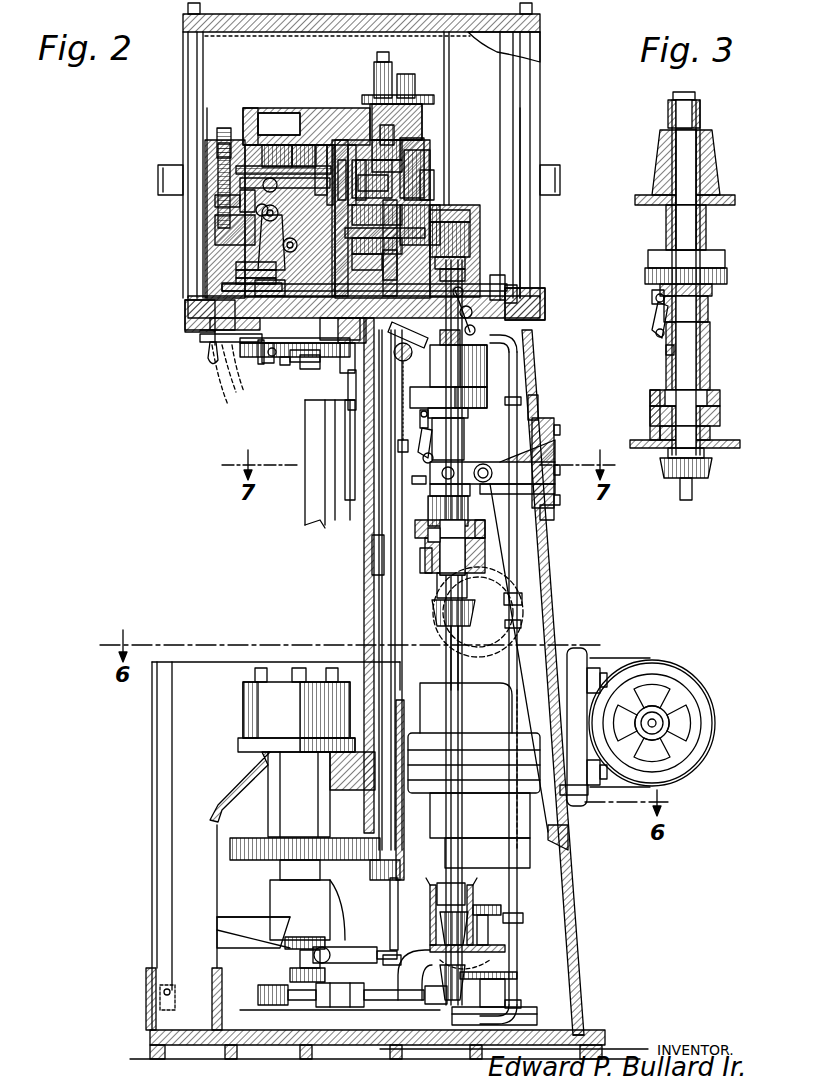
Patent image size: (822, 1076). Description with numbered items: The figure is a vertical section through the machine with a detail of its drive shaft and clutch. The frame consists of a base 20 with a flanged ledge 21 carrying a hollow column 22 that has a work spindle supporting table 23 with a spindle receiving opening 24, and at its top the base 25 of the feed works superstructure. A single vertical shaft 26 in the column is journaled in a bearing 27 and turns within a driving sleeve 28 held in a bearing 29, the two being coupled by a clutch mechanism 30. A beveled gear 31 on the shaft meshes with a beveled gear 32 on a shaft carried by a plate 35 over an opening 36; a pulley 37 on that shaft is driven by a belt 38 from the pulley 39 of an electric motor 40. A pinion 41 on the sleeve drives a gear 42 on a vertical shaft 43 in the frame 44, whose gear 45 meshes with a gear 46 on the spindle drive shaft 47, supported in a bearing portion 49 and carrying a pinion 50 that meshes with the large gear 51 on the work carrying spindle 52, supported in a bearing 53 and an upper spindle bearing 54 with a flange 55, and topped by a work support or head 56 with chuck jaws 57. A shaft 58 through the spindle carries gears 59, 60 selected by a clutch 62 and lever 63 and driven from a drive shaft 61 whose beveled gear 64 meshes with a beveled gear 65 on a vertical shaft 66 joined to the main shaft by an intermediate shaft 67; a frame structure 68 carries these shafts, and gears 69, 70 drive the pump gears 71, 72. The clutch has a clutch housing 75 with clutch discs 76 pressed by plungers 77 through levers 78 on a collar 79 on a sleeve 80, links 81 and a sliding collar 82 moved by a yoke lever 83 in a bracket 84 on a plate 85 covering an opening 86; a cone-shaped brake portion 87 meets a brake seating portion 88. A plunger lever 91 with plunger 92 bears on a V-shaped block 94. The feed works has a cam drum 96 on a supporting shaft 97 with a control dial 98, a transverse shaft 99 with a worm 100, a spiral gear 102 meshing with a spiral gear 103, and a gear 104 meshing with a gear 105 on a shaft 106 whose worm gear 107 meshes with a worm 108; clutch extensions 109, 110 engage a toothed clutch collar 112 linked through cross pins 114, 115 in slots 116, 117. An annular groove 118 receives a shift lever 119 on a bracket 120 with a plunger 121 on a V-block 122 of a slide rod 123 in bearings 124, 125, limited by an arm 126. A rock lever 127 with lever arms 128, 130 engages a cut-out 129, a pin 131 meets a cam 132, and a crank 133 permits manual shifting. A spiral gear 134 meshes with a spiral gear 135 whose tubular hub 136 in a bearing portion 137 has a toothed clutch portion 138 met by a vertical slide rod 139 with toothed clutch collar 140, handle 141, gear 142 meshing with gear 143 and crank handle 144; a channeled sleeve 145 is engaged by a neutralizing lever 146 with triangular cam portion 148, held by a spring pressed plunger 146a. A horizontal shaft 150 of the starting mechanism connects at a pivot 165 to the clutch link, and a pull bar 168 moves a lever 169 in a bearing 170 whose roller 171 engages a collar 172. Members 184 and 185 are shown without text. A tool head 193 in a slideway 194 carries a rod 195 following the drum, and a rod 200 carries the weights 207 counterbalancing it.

In FIG. 2, the base 20 is at (580, 1018).
In FIG. 2, the flanged ledge 21 is at (568, 835).
In FIG. 2, the hollow column 22 is at (520, 595).
In FIG. 2, the work spindle supporting table 23 is at (232, 785).
In FIG. 2, the spindle receiving opening 24 is at (260, 756).
In FIG. 2, the base of the superstructure 25 is at (540, 312).
In FIG. 2, the vertical shaft 26 is at (485, 547).
In FIG. 3, the vertical shaft 26 is at (712, 412).
In FIG. 2, the bearing 27 is at (470, 563).
In FIG. 3, the bearing 27 is at (712, 432).
In FIG. 2, the driving sleeve 28 is at (456, 340).
In FIG. 3, the driving sleeve 28 is at (704, 222).
In FIG. 2, the bearing 29 is at (470, 285).
In FIG. 3, the bearing 29 is at (712, 186).
In FIG. 2, the clutch mechanism 30 is at (452, 380).
In FIG. 2, the beveled gear 31 is at (472, 610).
In FIG. 3, the beveled gear 31 is at (704, 468).
In FIG. 2, the beveled gear 32 is at (478, 612).
In FIG. 2, the plate 35 is at (485, 528).
In FIG. 2, the opening 36 is at (491, 524).
In FIG. 2, the pulley 37 is at (462, 655).
In FIG. 2, the belt 38 is at (575, 640).
In FIG. 2, the pulley 39 is at (672, 705).
In FIG. 2, the electric motor 40 is at (645, 690).
In FIG. 2, the pinion 41 is at (462, 232).
In FIG. 3, the pinion 41 is at (700, 126).
In FIG. 2, the gear 42 is at (448, 222).
In FIG. 2, the vertical shaft 43 is at (405, 147).
In FIG. 2, the frame 44 is at (320, 145).
In FIG. 2, the gear 45 is at (415, 95).
In FIG. 2, the gear 46 is at (392, 76).
In FIG. 2, the spindle drive shaft 47 is at (352, 572).
In FIG. 2, the bearing portion 49 is at (400, 700).
In FIG. 2, the pinion 50 is at (370, 868).
In FIG. 2, the large gear 51 is at (230, 848).
In FIG. 2, the work carrying spindle 52 is at (280, 870).
In FIG. 2, the bearing 53 is at (280, 900).
In FIG. 2, the upper spindle bearing 54 is at (285, 790).
In FIG. 2, the flange 55 is at (245, 740).
In FIG. 2, the work support or head 56 is at (243, 695).
In FIG. 2, the chuck jaws 57 is at (297, 668).
In FIG. 2, the shaft 58 is at (300, 955).
In FIG. 2, the gear 59 is at (290, 940).
In FIG. 2, the gear 60 is at (290, 974).
In FIG. 2, the drive shaft 61 is at (350, 1010).
In FIG. 2, the clutch 62 is at (312, 940).
In FIG. 2, the lever 63 is at (355, 950).
In FIG. 2, the beveled gear 64 is at (440, 1005).
In FIG. 2, the beveled gear 65 is at (488, 995).
In FIG. 2, the vertical shaft 66 is at (495, 915).
In FIG. 2, the intermediate shaft 67 is at (448, 713).
In FIG. 2, the frame structure 68 is at (406, 955).
In FIG. 2, the gear 69 is at (462, 912).
In FIG. 2, the gear 70 is at (490, 962).
In FIG. 2, the gear 71 is at (488, 940).
In FIG. 2, the gear 72 is at (500, 979).
In FIG. 2, the clutch housing 75 is at (487, 395).
In FIG. 3, the clutch housing 75 is at (725, 266).
In FIG. 3, the clutch discs 76 is at (727, 276).
In FIG. 2, the plungers 77 is at (420, 420).
In FIG. 3, the plungers 77 is at (652, 296).
In FIG. 2, the levers 78 is at (420, 445).
In FIG. 3, the levers 78 is at (655, 315).
In FIG. 2, the collar 79 is at (468, 415).
In FIG. 3, the collar 79 is at (712, 296).
In FIG. 2, the sleeve 80 is at (464, 435).
In FIG. 3, the sleeve 80 is at (708, 318).
In FIG. 2, the links 81 is at (420, 484).
In FIG. 3, the links 81 is at (660, 338).
In FIG. 2, the sliding collar 82 is at (438, 508).
In FIG. 3, the sliding collar 82 is at (710, 340).
In FIG. 2, the yoke lever 83 is at (468, 468).
In FIG. 2, the bracket 84 is at (505, 494).
In FIG. 2, the plate 85 is at (556, 470).
In FIG. 2, the opening 86 is at (548, 420).
In FIG. 2, the cone-shaped brake portion 87 is at (425, 530).
In FIG. 3, the cone-shaped brake portion 87 is at (710, 392).
In FIG. 2, the brake seating portion 88 is at (420, 560).
In FIG. 3, the brake seating portion 88 is at (652, 412).
In FIG. 2, the plunger lever 91 is at (470, 490).
In FIG. 2, the plunger 92 is at (540, 406).
In FIG. 2, the V-shaped block 94 is at (556, 452).
In FIG. 2, the cam drum 96 is at (377, 251).
In FIG. 2, the supporting shaft 97 is at (300, 357).
In FIG. 2, the control dial 98 is at (256, 357).
In FIG. 2, the transverse shaft 99 is at (366, 179).
In FIG. 2, the worm 100 is at (250, 112).
In FIG. 2, the spiral gear 102 is at (412, 170).
In FIG. 2, the spiral gear 103 is at (430, 192).
In FIG. 2, the gear 104 is at (200, 214).
In FIG. 2, the gear 105 is at (224, 128).
In FIG. 2, the shaft 106 is at (272, 113).
In FIG. 2, the worm gear 107 is at (430, 110).
In FIG. 2, the worm 108 is at (398, 135).
In FIG. 2, the toothed clutch extension 109 is at (405, 165).
In FIG. 2, the toothed clutch extension 110 is at (225, 205).
In FIG. 2, the toothed clutch collar 112 is at (226, 160).
In FIG. 2, the cross pin 114 is at (377, 227).
In FIG. 2, the cross pin 115 is at (245, 210).
In FIG. 2, the slot 116 is at (371, 180).
In FIG. 2, the slot 117 is at (245, 218).
In FIG. 2, the annular groove 118 is at (272, 175).
In FIG. 2, the shift lever 119 is at (272, 240).
In FIG. 2, the bracket 120 is at (240, 238).
In FIG. 2, the plunger 121 is at (245, 287).
In FIG. 2, the V-block 122 is at (212, 362).
In FIG. 2, the slide rod 123 is at (500, 270).
In FIG. 2, the bearing 124 is at (200, 338).
In FIG. 2, the bearing 125 is at (505, 280).
In FIG. 2, the arm 126 is at (278, 218).
In FIG. 2, the rock lever 127 is at (214, 385).
In FIG. 2, the lever arm 128 is at (208, 350).
In FIG. 2, the cut-out 129 is at (195, 312).
In FIG. 2, the lever arm 130 is at (232, 372).
In FIG. 2, the pin 131 is at (258, 360).
In FIG. 2, the cam 132 is at (266, 365).
In FIG. 2, the crank 133 is at (222, 372).
In FIG. 2, the spiral gear 134 is at (342, 160).
In FIG. 2, the spiral gear 135 is at (278, 145).
In FIG. 2, the tubular hub 136 is at (302, 145).
In FIG. 2, the bearing portion 137 is at (360, 160).
In FIG. 2, the toothed clutch portion 138 is at (352, 145).
In FIG. 2, the vertical slide rod 139 is at (318, 367).
In FIG. 2, the toothed clutch collar 140 is at (330, 145).
In FIG. 2, the handle 141 is at (340, 329).
In FIG. 2, the gear 142 is at (300, 364).
In FIG. 2, the gear 143 is at (272, 380).
In FIG. 2, the crank handle 144 is at (284, 365).
In FIG. 2, the annularly channeled sleeve 145 is at (367, 266).
In FIG. 2, the neutralizing lever 146 is at (236, 265).
In FIG. 2, the spring pressed plunger 146a is at (236, 280).
In FIG. 2, the triangular cam portion 148 is at (236, 273).
In FIG. 2, the horizontal shaft 150 is at (353, 450).
In FIG. 2, the pivotal connection 165 is at (412, 352).
In FIG. 2, the pull bar 168 is at (430, 317).
In FIG. 2, the lever 169 is at (471, 328).
In FIG. 2, the bearing 170 is at (517, 292).
In FIG. 2, the roller 171 is at (466, 260).
In FIG. 2, the collar 172 is at (466, 275).
In FIG. 2, the bar 184 is at (354, 367).
In FIG. 2, the bar 185 is at (355, 393).
In FIG. 2, the tool head 193 is at (305, 506).
In FIG. 2, the slideway 194 is at (340, 520).
In FIG. 2, the rod 195 is at (424, 224).
In FIG. 2, the rod 200 is at (478, 690).
In FIG. 2, the weights 207 is at (588, 795).